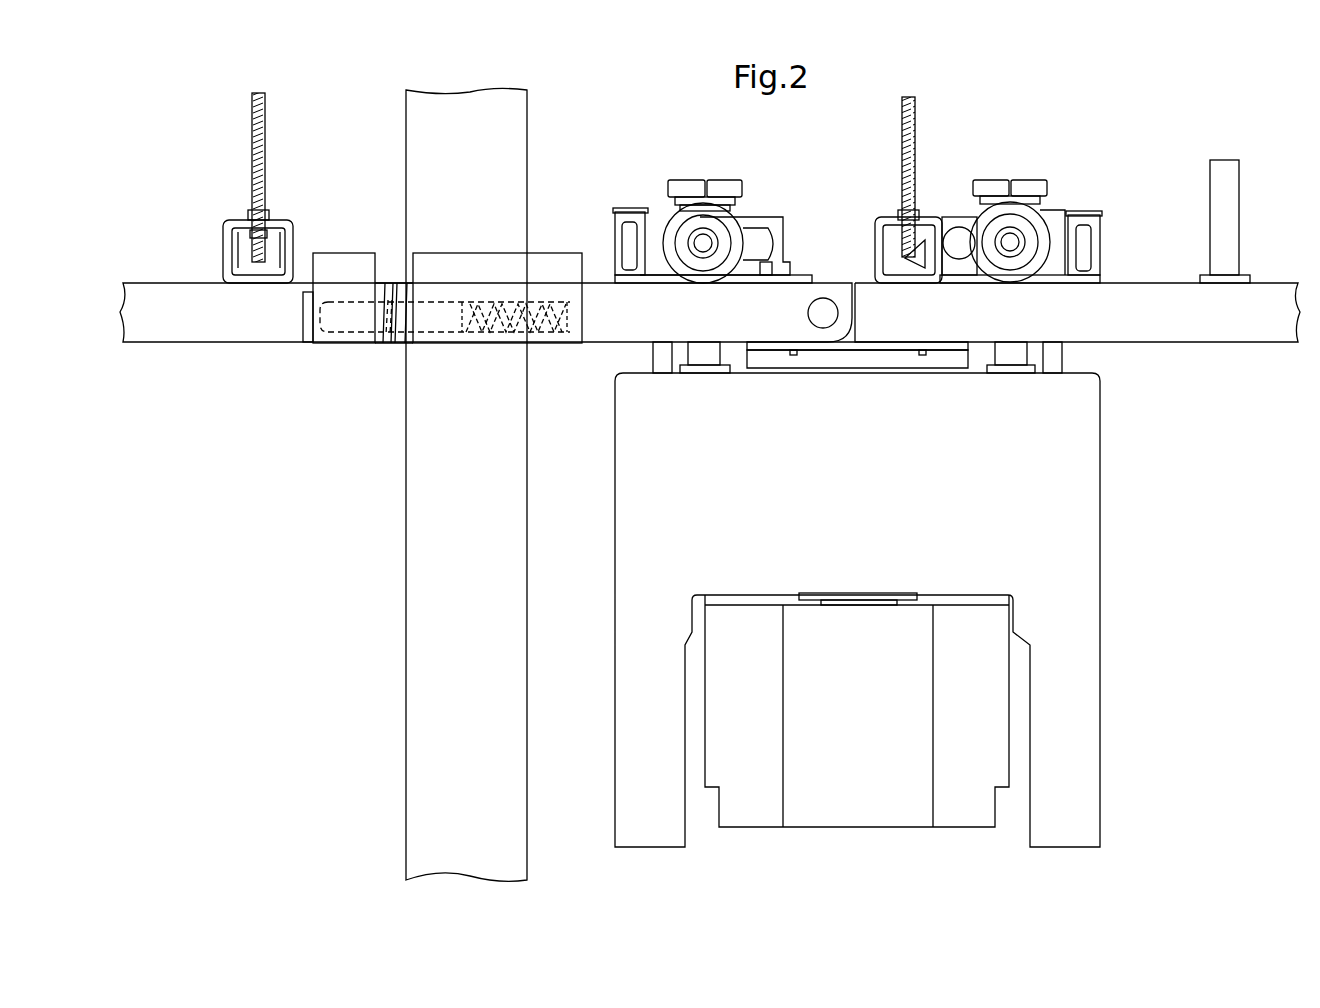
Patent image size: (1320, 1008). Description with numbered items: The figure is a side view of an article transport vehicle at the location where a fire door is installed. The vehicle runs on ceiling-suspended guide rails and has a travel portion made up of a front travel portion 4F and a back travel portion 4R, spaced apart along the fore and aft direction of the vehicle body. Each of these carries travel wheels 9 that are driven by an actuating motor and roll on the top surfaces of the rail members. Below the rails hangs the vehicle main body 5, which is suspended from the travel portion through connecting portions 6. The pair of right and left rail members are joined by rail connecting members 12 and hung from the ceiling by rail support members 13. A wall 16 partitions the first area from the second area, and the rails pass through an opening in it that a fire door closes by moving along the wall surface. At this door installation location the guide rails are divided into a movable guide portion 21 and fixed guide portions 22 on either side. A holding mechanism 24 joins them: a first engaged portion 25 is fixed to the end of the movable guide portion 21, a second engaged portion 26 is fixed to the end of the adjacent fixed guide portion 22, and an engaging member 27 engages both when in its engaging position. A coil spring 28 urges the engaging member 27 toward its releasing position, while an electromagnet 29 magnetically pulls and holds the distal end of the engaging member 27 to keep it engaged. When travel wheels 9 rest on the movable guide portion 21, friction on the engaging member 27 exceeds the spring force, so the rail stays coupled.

The front travel portion 4F is at (604, 208).
The back travel portion 4R is at (1063, 192).
The vehicle main body 5 is at (1090, 675).
The connecting portions 6 is at (656, 355).
The travel wheels 9 is at (735, 230).
The rail connecting members 12 is at (1232, 210).
The rail support members 13 is at (252, 148).
The wall 16 is at (422, 626).
The movable guide portions 21 is at (591, 330).
The fixed guide portions 22 is at (175, 340).
The holding mechanism 24 is at (433, 232).
The first engaged portion 25 is at (447, 270).
The second engaged portion 26 is at (342, 265).
The engaging member 27 is at (400, 330).
The coil spring 28 is at (468, 335).
The electromagnet 29 is at (301, 320).